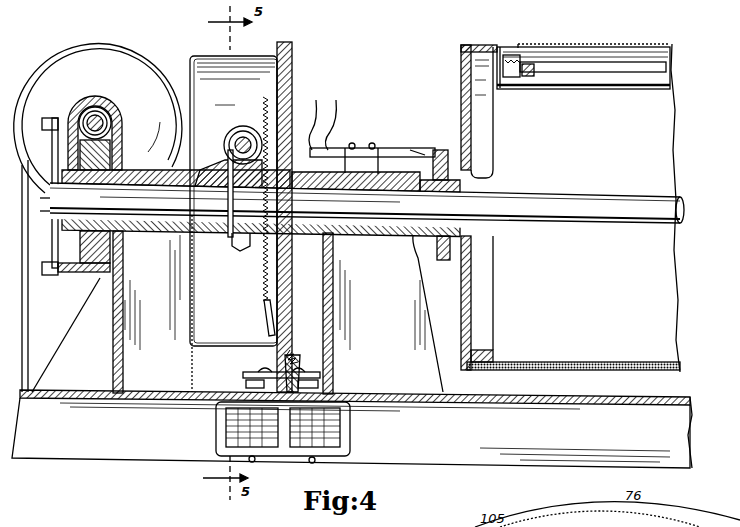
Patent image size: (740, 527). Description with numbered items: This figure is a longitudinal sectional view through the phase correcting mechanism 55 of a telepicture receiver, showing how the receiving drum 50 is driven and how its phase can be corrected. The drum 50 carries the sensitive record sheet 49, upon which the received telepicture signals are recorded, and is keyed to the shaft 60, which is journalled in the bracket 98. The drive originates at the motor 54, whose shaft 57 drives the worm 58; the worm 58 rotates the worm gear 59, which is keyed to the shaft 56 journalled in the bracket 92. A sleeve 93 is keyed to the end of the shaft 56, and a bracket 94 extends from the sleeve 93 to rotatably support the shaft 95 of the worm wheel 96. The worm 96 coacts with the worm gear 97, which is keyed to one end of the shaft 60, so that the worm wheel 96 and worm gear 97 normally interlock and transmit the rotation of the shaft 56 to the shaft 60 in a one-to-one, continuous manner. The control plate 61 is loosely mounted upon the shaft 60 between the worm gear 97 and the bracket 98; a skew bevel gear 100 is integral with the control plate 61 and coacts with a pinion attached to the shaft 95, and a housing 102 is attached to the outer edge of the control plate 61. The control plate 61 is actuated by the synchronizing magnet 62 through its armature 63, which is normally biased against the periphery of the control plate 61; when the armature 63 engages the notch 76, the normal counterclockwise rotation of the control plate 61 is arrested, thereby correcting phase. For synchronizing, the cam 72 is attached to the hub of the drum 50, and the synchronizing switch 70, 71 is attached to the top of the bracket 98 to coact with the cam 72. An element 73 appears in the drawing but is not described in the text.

The record sheet 49 is at (622, 375).
The drum 50 is at (461, 70).
The motor 54 is at (84, 58).
The phasing mechanism 55 is at (194, 54).
The shaft 56 is at (165, 205).
The shaft of motor 57 is at (90, 112).
The worm 58 is at (105, 112).
The worm gear 59 is at (100, 280).
The shaft 60 is at (296, 184).
The control plate 61 is at (291, 88).
The synchronizing magnet 62 is at (346, 426).
The armature 63 is at (294, 360).
The synchronizing switch 70 is at (392, 148).
The synchronizing switch 71 is at (414, 149).
The synchronizing cam 72 is at (442, 260).
The block 73 is at (446, 148).
The notch 76 is at (265, 368).
The bracket 92 is at (180, 372).
The sleeve 93 is at (226, 236).
The bracket 94 is at (226, 160).
The shaft 95 is at (261, 128).
The worm wheel 96 is at (232, 132).
The worm gear 97 is at (248, 251).
The bracket 98 is at (428, 306).
The skew bevel gear 100 is at (266, 330).
The housing 102 is at (196, 310).